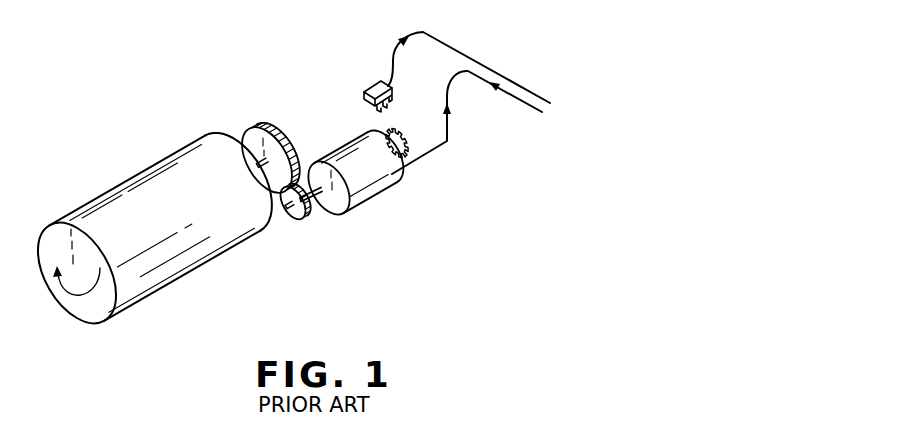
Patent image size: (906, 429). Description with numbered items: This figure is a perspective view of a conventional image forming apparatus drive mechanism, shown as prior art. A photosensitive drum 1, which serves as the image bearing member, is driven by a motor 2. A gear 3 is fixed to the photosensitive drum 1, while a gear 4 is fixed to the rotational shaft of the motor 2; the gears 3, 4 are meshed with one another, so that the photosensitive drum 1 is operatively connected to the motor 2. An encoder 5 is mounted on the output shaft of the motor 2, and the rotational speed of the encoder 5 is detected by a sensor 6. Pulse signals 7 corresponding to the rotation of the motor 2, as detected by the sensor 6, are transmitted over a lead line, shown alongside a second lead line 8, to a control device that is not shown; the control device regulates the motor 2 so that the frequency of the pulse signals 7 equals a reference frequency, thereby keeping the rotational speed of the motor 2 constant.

The photosensitive drum 1 is at (197, 253).
The motor 2 is at (377, 184).
The gear 3 is at (261, 127).
The gear 4 is at (302, 221).
The encoder 5 is at (408, 131).
The sensor 6 is at (369, 84).
The pulse signals 7 is at (487, 70).
The lead wire 8 is at (517, 97).